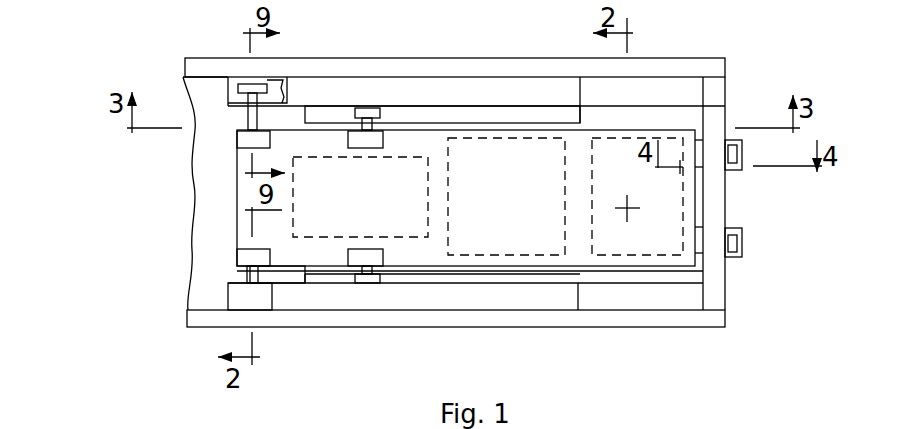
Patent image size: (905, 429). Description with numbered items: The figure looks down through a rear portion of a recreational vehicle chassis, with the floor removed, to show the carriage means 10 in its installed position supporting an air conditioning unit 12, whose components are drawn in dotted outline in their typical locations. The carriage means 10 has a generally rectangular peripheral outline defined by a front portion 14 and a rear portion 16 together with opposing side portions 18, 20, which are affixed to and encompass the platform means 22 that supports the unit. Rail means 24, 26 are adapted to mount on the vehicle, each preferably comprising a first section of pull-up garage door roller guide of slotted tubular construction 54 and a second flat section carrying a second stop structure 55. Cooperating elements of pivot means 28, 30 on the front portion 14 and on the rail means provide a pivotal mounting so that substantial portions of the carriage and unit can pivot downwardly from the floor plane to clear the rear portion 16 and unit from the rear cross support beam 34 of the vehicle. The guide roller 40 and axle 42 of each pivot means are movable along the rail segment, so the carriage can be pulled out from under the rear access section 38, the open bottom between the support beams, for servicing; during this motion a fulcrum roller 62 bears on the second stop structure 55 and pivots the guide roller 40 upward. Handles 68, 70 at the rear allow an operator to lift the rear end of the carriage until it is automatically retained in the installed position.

The carriage means 10 is at (488, 128).
The air conditioning unit 12 is at (372, 208).
The front portion 14 is at (237, 193).
The rear portion 16 is at (697, 130).
The side portion 18 is at (438, 130).
The side portion 20 is at (450, 267).
The platform means 22 is at (428, 250).
The rail means 24 is at (336, 74).
The rail means 26 is at (507, 312).
The pivot means 28 is at (227, 107).
The pivot means 30 is at (217, 281).
The rear cross support beam 34 is at (728, 286).
The rear access section 38 is at (284, 272).
The guide roller 40 is at (243, 84).
The axle 42 is at (247, 118).
The slotted tubular construction 54 is at (270, 78).
The second stop structure 55 is at (403, 118).
The fulcrum roller 62 is at (360, 108).
The handle 68 is at (742, 160).
The handle 70 is at (742, 243).